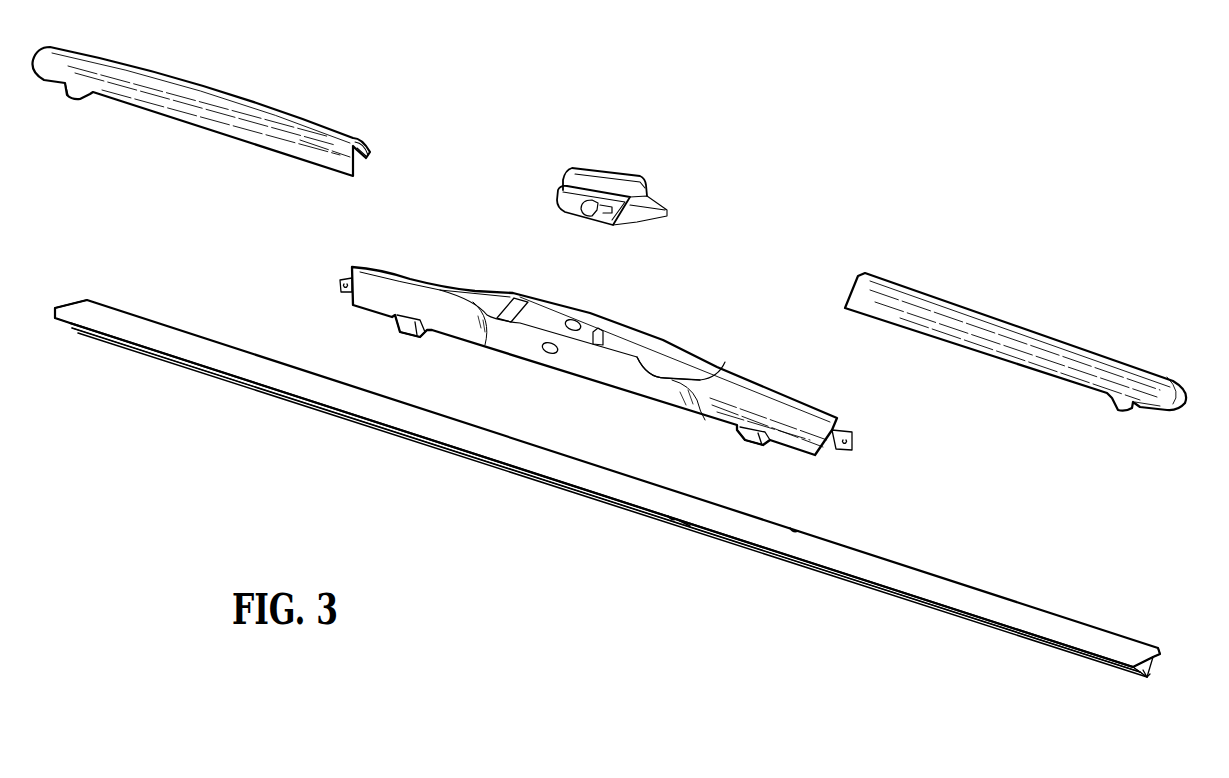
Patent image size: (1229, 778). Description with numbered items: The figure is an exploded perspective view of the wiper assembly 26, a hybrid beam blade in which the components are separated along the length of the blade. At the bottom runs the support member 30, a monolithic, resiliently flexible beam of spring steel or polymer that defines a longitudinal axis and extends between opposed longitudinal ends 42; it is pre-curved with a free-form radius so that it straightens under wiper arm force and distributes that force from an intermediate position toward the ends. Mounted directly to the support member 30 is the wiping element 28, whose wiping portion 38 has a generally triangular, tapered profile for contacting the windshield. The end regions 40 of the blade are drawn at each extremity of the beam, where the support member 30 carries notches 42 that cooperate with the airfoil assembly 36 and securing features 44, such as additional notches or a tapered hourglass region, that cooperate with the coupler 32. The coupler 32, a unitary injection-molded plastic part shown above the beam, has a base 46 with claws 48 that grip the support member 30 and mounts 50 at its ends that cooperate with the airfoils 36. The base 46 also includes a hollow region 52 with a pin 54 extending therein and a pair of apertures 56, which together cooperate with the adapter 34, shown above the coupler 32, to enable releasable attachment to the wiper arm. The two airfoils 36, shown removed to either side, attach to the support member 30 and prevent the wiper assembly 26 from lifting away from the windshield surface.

The wiper assembly 26 is at (899, 149).
The wiping element 28 is at (1147, 668).
The support member 30 is at (617, 493).
The coupler 32 is at (719, 368).
The adapter 34 is at (604, 168).
The airfoil assembly 36 is at (233, 94).
The wiping portion 38 is at (1152, 678).
The end cap 40 is at (73, 300).
The longitudinal ends 42 is at (78, 330).
The securing features 44 is at (670, 518).
The base 46 is at (660, 333).
The claws 48 is at (410, 334).
The mounts 50 is at (340, 284).
The hollow region 52 is at (540, 320).
The pin 54 is at (605, 340).
The apertures 56 is at (553, 356).